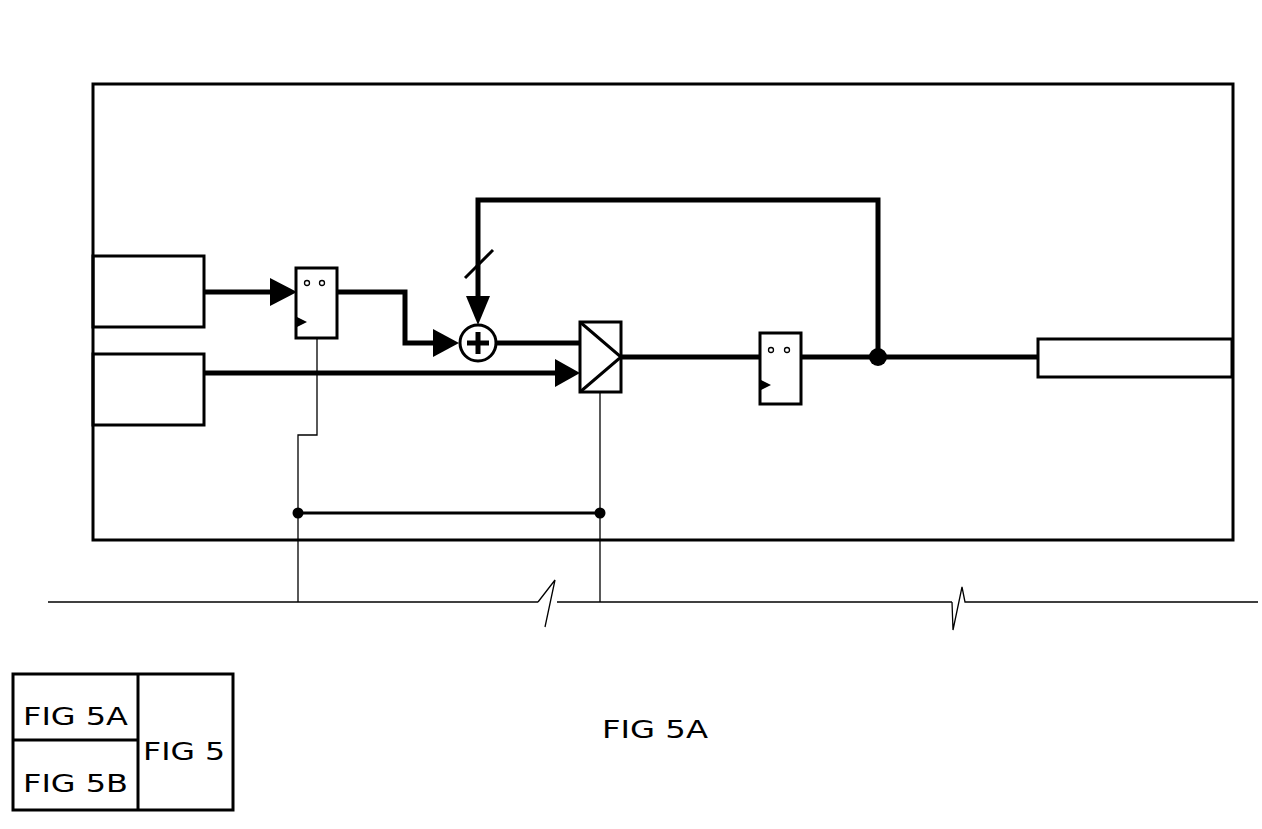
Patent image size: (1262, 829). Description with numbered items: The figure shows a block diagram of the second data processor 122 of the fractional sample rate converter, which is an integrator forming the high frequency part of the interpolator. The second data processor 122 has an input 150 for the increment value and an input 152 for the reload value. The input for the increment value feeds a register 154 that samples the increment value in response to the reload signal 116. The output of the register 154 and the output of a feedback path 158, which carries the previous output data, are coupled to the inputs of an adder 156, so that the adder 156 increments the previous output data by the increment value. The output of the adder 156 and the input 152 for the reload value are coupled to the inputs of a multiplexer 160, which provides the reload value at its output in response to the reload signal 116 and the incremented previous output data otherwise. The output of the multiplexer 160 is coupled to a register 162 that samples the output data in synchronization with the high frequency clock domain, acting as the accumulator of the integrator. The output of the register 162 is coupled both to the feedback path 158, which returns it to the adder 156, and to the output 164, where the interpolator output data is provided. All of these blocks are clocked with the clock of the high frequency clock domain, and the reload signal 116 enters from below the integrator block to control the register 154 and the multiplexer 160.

The second data processor 122 is at (1082, 84).
The input for the increment value 150 is at (150, 256).
The input for the reload value 152 is at (150, 425).
The register for sampling the increment value 154 is at (337, 305).
The adder 156 is at (466, 322).
The feedback path 158 is at (519, 198).
The multiplexer 160 is at (621, 392).
The register for sampling the output data 162 is at (801, 392).
The output for providing the output data 164 is at (1137, 377).
The reload signal 116 is at (598, 510).